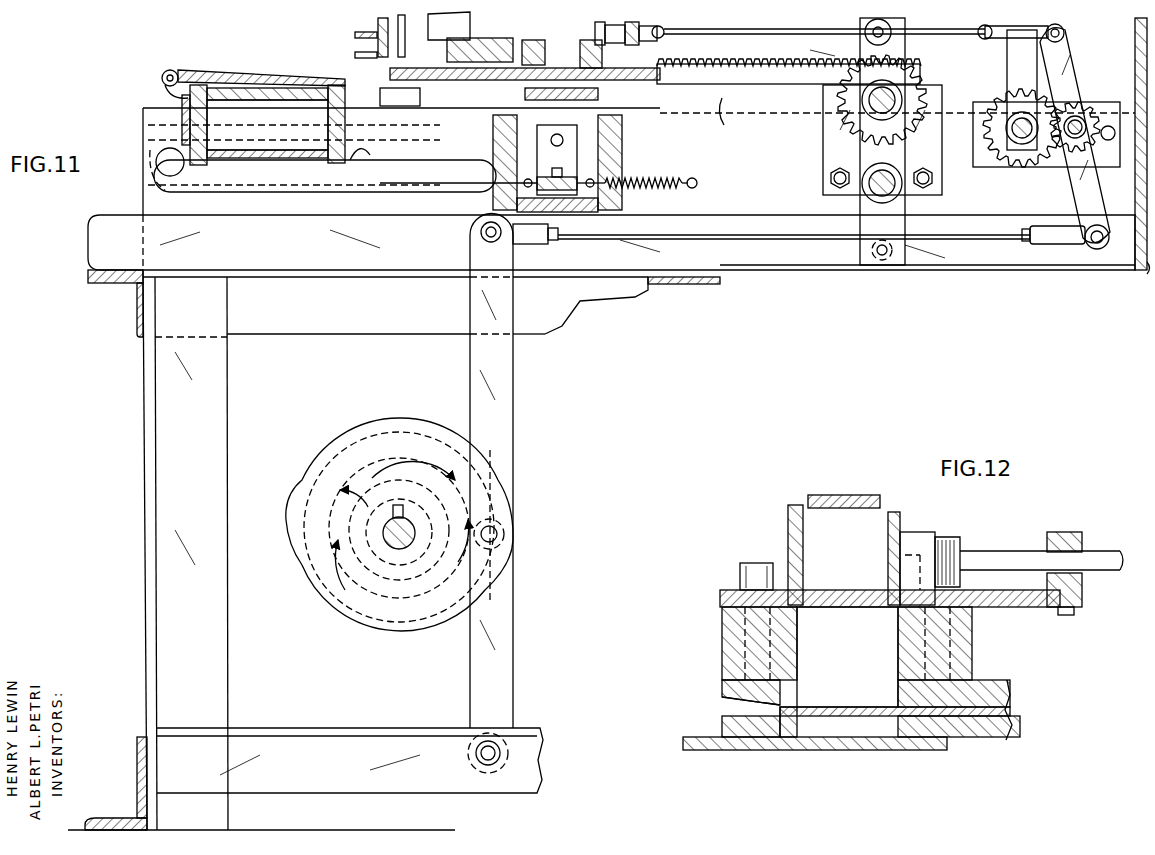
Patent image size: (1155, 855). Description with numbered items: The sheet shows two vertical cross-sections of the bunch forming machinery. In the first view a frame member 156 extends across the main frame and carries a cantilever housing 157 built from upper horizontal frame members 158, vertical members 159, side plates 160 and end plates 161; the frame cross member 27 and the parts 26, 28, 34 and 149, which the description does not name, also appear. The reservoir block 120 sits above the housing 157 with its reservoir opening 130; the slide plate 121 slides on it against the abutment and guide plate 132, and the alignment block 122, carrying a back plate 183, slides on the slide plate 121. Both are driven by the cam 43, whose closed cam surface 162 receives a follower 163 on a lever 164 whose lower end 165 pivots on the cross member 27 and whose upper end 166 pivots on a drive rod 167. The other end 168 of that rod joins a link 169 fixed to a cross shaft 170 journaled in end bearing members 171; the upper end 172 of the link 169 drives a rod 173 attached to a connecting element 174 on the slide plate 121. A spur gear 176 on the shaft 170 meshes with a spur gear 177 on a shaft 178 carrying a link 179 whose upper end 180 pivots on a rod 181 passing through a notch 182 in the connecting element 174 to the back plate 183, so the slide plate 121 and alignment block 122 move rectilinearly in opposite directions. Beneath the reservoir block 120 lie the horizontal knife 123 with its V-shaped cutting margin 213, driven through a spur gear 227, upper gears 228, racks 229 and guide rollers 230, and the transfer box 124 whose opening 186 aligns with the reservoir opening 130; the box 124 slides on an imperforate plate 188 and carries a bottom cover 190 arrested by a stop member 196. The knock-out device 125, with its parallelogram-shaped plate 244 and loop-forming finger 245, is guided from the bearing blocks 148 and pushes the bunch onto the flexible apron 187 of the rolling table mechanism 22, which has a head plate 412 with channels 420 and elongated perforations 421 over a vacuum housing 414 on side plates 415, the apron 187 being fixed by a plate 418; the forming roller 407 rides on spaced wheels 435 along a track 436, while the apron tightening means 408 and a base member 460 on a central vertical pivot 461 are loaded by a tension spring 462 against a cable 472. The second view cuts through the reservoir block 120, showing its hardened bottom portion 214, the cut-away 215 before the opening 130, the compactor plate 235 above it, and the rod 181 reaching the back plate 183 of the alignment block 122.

In FIG. 11, the rolling table mechanism 22 is at (188, 62).
In FIG. 11, the bracket 26 is at (137, 325).
In FIG. 11, the frame cross member 27 is at (350, 740).
In FIG. 11, the column 28 is at (220, 432).
In FIG. 11, the hub shaft 34 is at (410, 517).
In FIG. 11, the cam 43 is at (320, 605).
In FIG. 11, the reservoir block 120 is at (525, 70).
In FIG. 12, the reservoir block 120 is at (972, 650).
In FIG. 11, the slide plate 121 is at (515, 40).
In FIG. 12, the slide plate 121 is at (823, 598).
In FIG. 11, the alignment block 122 is at (598, 36).
In FIG. 12, the alignment block 122 is at (905, 515).
In FIG. 12, the horizontal knife 123 is at (838, 703).
In FIG. 11, the transfer box 124 is at (330, 76).
In FIG. 12, the transfer box 124 is at (935, 745).
In FIG. 11, the knockout device 125 is at (375, 26).
In FIG. 11, the reservoir opening 130 is at (622, 128).
In FIG. 12, the reservoir opening 130 is at (847, 657).
In FIG. 11, the abutment and guide plate 132 is at (540, 38).
In FIG. 12, the abutment and guide plate 132 is at (786, 528).
In FIG. 11, the bearing blocks 148 is at (450, 52).
In FIG. 11, the member 149 is at (440, 88).
In FIG. 11, the frame member 156 is at (611, 274).
In FIG. 11, the cantilever housing 157 is at (1005, 280).
In FIG. 11, the upper horizontal frame members 158 is at (639, 156).
In FIG. 11, the vertical members 159 is at (898, 220).
In FIG. 11, the side plates 160 is at (1023, 247).
In FIG. 11, the end plates 161 is at (1141, 272).
In FIG. 11, the closed cam surface 162 is at (372, 618).
In FIG. 11, the follower 163 is at (505, 560).
In FIG. 11, the lever 164 is at (470, 382).
In FIG. 11, the lower end of lever 165 is at (496, 745).
In FIG. 11, the upper end of lever 166 is at (481, 235).
In FIG. 11, the drive rod 167 is at (755, 230).
In FIG. 11, the other end of drive rod 168 is at (1098, 250).
In FIG. 11, the link 169 is at (1075, 72).
In FIG. 11, the cross shaft 170 is at (1065, 118).
In FIG. 11, the end bearing members 171 is at (1055, 175).
In FIG. 11, the upper end of link 172 is at (1065, 33).
In FIG. 11, the rod 173 is at (789, 68).
In FIG. 11, the connecting element 174 is at (652, 30).
In FIG. 12, the connecting element 174 is at (1085, 540).
In FIG. 11, the spur gear 176 is at (1095, 168).
In FIG. 11, the spur gear 177 is at (1005, 155).
In FIG. 11, the shaft 178 is at (1022, 142).
In FIG. 11, the link 179 is at (1007, 75).
In FIG. 11, the upper end of link 180 is at (1010, 22).
In FIG. 11, the rod 181 is at (635, 45).
In FIG. 12, the rod 181 is at (978, 555).
In FIG. 12, the opening or notch 182 is at (1075, 570).
In FIG. 11, the back plate 183 is at (618, 45).
In FIG. 12, the back plate 183 is at (925, 522).
In FIG. 11, the transfer box opening 186 is at (390, 72).
In FIG. 12, the transfer box opening 186 is at (795, 722).
In FIG. 11, the flexible apron 187 is at (172, 66).
In FIG. 11, the imperforate plate 188 is at (470, 95).
In FIG. 12, the bottom cover 190 is at (975, 752).
In FIG. 12, the stop member 196 is at (928, 720).
In FIG. 11, the V-shaped cutting margin 213 is at (400, 97).
In FIG. 12, the V-shaped cutting margin 213 is at (785, 725).
In FIG. 12, the bottom portion of reservoir block 214 is at (720, 686).
In FIG. 12, the cut-away portion 215 is at (722, 700).
In FIG. 11, the spur gear 227 is at (823, 158).
In FIG. 11, the upper gear 228 is at (918, 82).
In FIG. 11, the racks 229 is at (718, 55).
In FIG. 11, the guide rollers 230 is at (862, 28).
In FIG. 12, the plate 235 is at (858, 495).
In FIG. 11, the parallelogram-shaped plate 244 is at (355, 35).
In FIG. 11, the loop forming vertical plate or finger 245 is at (378, 56).
In FIG. 11, the forming roller 407 is at (165, 82).
In FIG. 11, the apron tightening means 408 is at (600, 143).
In FIG. 11, the head plate 412 is at (246, 78).
In FIG. 11, the vacuum housing 414 is at (325, 176).
In FIG. 11, the side plates 415 is at (294, 163).
In FIG. 11, the plate 418 is at (182, 100).
In FIG. 11, the channels 420 is at (212, 85).
In FIG. 11, the elongated perforations 421 is at (295, 120).
In FIG. 11, the spaced wheels 435 is at (175, 181).
In FIG. 11, the track 436 is at (365, 178).
In FIG. 11, the base member 460 is at (577, 190).
In FIG. 11, the central vertical pivot 461 is at (577, 168).
In FIG. 11, the tension spring 462 is at (672, 176).
In FIG. 11, the cable 472 is at (485, 190).